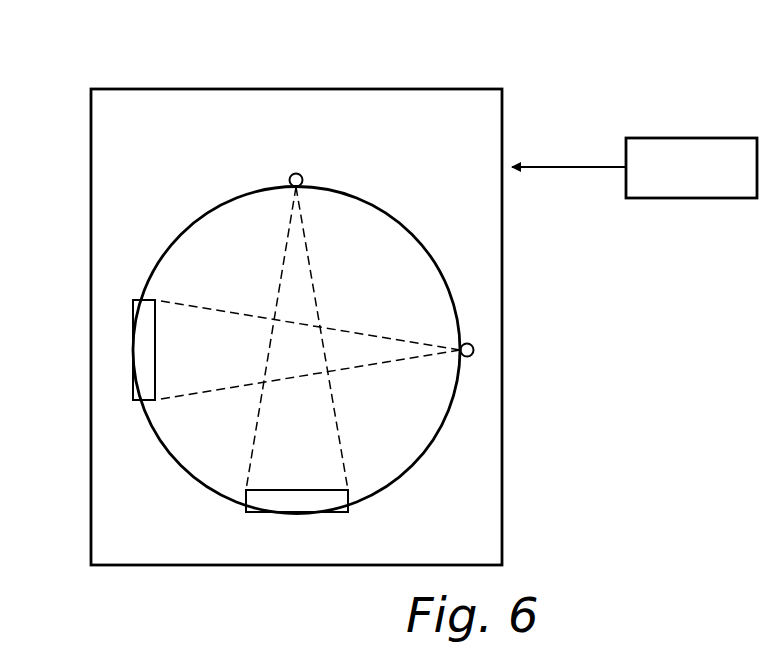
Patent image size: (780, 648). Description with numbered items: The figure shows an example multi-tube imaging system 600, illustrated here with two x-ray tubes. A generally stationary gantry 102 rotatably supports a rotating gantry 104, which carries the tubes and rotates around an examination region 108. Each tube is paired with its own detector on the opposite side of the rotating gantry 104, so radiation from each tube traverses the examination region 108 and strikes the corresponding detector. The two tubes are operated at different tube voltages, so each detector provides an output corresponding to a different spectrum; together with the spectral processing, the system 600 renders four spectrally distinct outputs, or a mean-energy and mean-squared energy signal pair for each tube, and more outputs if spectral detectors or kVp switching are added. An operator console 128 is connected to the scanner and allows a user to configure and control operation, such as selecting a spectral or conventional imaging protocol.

The multi-tube system 600 is at (122, 68).
The stationary gantry 102 is at (90, 192).
The rotating gantry 104 is at (163, 446).
The examination region 108 is at (313, 424).
The operator console 128 is at (697, 137).